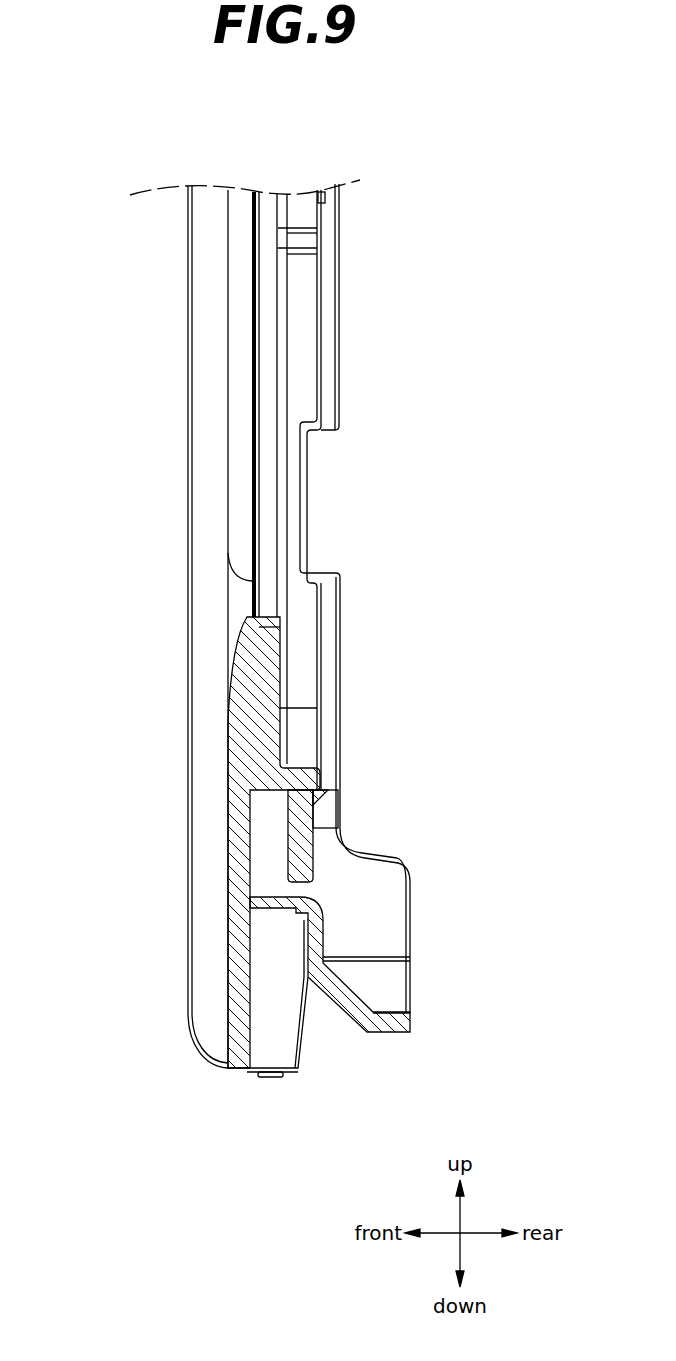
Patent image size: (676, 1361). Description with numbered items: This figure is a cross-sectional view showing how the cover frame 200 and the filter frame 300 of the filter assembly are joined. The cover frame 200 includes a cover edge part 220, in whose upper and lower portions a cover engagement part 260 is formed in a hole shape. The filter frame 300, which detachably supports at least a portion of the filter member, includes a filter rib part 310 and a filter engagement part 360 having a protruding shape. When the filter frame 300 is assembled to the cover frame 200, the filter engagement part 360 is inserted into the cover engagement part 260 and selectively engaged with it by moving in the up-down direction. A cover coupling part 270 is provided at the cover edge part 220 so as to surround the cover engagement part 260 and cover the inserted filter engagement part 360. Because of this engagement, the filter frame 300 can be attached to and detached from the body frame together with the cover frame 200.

The cover frame 200 is at (128, 777).
The cover edge part 220 is at (200, 845).
The cover engagement part 260 is at (268, 790).
The cover coupling part 270 is at (410, 1020).
The filter frame 300 is at (437, 722).
The filter rib part 310 is at (308, 680).
The filter engagement part 360 is at (305, 837).